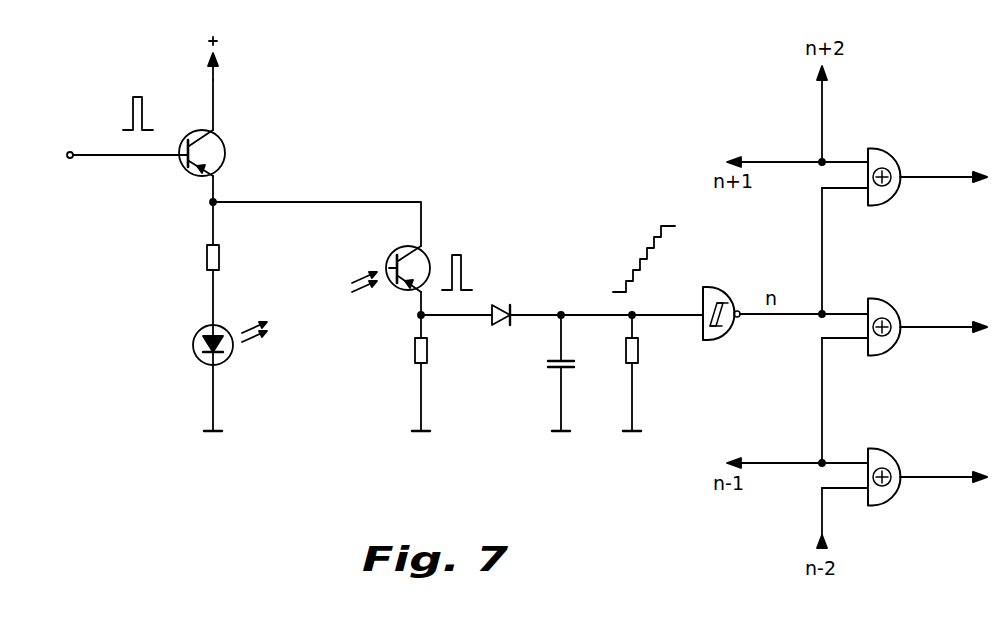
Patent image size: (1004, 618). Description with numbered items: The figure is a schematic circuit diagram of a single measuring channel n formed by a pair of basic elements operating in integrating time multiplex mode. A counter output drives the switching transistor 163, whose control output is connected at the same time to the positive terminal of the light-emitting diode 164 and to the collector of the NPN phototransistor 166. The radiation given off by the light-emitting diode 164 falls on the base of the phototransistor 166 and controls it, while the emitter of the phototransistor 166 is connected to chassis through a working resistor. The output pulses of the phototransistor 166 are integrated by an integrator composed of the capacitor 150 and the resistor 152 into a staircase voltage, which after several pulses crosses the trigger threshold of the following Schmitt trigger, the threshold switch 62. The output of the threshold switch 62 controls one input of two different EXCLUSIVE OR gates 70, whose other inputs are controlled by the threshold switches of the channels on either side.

The switching transistor 163 is at (214, 152).
The light-emitting diode 164 is at (228, 350).
The phototransistor 166 is at (427, 254).
The capacitor 150 is at (557, 366).
The resistor 152 is at (639, 355).
The threshold switch 62 is at (713, 291).
The EXCLUSIVE OR gate 70 is at (880, 153).